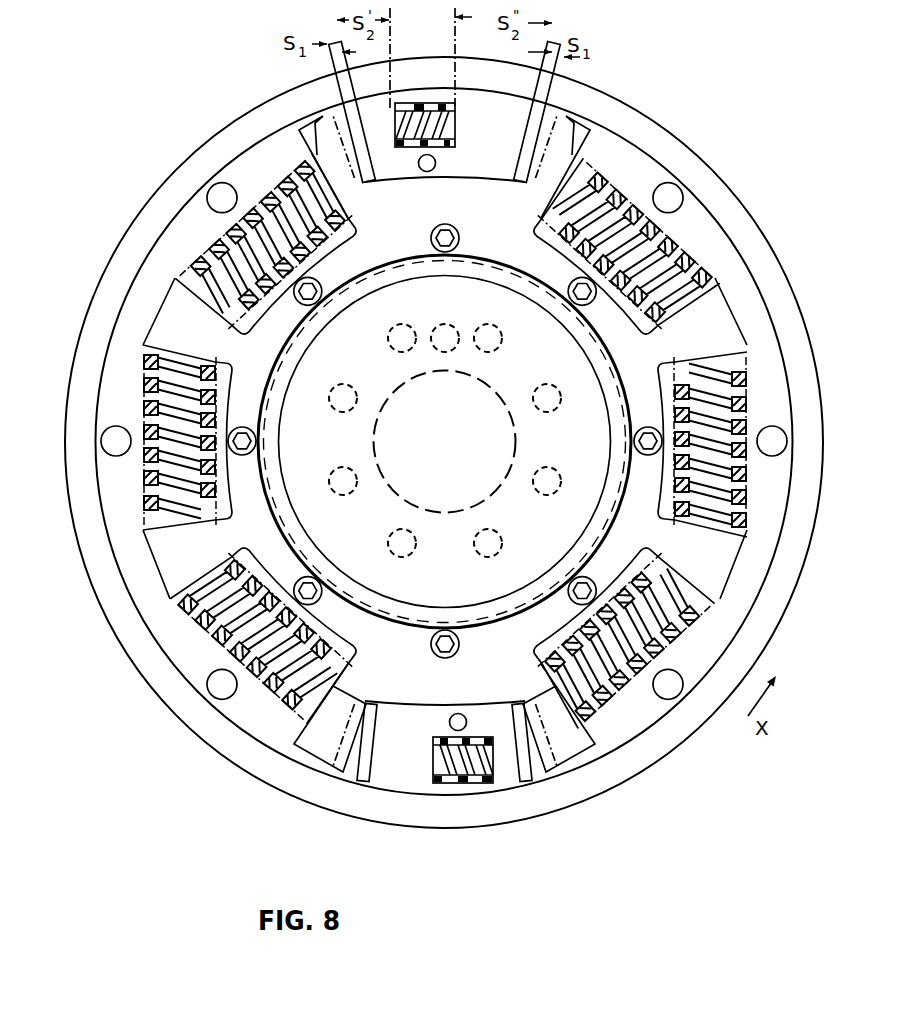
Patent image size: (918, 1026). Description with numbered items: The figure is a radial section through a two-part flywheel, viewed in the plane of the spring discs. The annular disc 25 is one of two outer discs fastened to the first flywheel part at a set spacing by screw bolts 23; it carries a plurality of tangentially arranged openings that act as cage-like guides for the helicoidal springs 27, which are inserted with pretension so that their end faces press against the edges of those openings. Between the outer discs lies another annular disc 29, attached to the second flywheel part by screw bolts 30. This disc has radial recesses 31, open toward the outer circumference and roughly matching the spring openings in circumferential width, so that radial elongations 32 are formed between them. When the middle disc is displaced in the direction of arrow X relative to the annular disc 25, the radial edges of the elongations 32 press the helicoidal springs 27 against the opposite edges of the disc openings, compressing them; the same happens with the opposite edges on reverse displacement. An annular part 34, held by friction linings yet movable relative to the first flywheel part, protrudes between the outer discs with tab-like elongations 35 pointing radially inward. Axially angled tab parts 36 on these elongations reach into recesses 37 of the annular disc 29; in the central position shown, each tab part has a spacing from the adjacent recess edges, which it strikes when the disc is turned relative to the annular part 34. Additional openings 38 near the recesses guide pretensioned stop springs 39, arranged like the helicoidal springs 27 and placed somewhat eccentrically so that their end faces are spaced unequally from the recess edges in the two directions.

The screw bolts 23 is at (227, 190).
The annular disc 25 is at (724, 257).
The helicoidal springs 27 is at (341, 226).
The annular disc 29 is at (527, 224).
The screw bolts 30 is at (445, 226).
The radial recesses 31 is at (291, 378).
The radial elongations 32 is at (316, 132).
The annular part 34 is at (648, 130).
The tab-like elongations 35 is at (350, 146).
The tab parts 36 is at (366, 128).
The recesses 37 is at (455, 172).
The additional openings 38 is at (457, 115).
The stop springs 39 is at (433, 118).